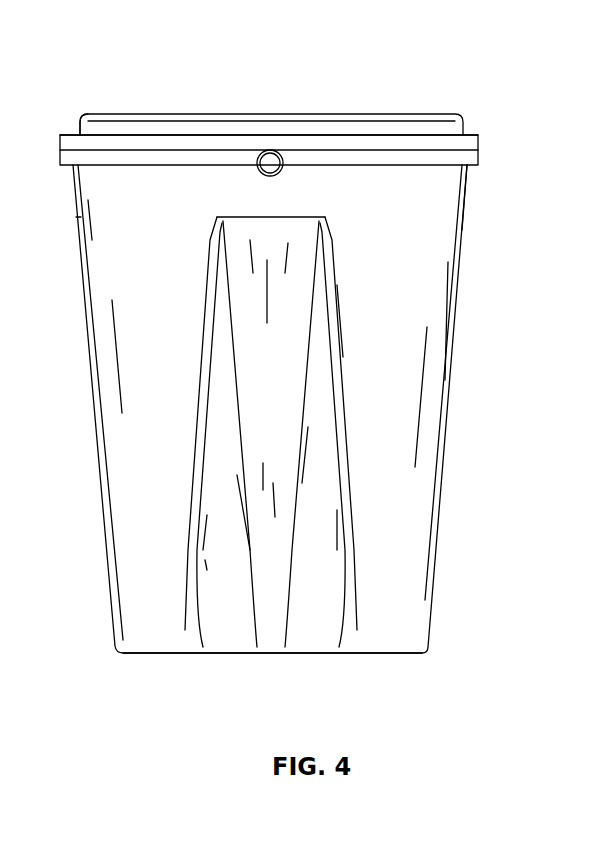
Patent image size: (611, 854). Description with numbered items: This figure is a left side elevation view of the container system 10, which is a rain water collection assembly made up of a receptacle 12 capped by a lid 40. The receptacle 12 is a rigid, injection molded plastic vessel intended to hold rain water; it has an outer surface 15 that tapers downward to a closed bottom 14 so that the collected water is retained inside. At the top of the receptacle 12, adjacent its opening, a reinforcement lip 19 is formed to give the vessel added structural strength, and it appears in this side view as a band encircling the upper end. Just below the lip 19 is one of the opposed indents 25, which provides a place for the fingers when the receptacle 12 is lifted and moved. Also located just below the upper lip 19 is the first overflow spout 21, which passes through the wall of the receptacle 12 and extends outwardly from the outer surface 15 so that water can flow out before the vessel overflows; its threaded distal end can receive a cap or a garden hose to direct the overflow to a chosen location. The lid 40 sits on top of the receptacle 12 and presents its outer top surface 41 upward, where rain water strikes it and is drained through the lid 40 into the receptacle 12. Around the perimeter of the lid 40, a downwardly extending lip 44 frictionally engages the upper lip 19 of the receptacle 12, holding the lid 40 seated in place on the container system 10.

The container system 10 is at (513, 83).
The receptacle 12 is at (455, 322).
The closed bottom 14 is at (395, 675).
The outer surface 15 is at (435, 468).
The reinforcement lip 19 is at (476, 157).
The first overflow spout 21 is at (280, 178).
The opposed indents 25 is at (465, 195).
The lid 40 is at (362, 110).
The outer top surface 41 is at (80, 125).
The downwardly extending lip 44 is at (470, 138).